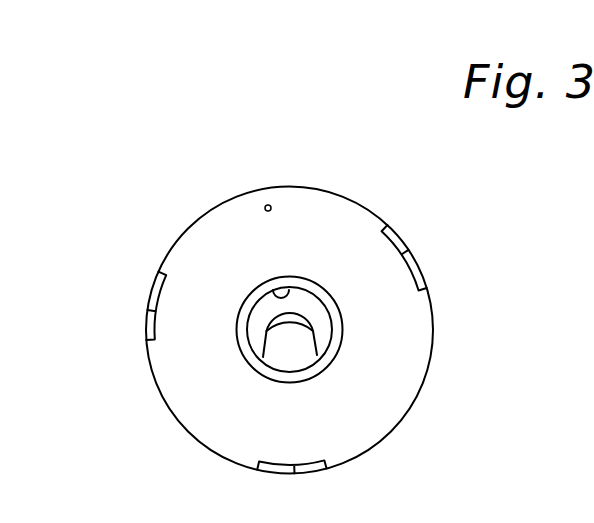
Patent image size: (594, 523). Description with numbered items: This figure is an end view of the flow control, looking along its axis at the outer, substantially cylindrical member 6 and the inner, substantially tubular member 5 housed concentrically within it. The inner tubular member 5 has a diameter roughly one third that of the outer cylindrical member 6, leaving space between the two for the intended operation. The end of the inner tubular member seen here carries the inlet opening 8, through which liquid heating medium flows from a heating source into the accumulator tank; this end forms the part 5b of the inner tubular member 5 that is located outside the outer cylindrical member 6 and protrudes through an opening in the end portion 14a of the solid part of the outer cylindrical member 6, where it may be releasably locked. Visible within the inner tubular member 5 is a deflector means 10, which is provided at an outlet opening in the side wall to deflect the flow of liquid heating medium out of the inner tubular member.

The outer cylindrical member 6 is at (236, 313).
The inner tubular member 5 is at (242, 283).
The part of the inner tubular member located outside the outer cylindrical member 5b is at (320, 287).
The inlet opening 8 is at (288, 292).
The end portion of the solid part 14a is at (190, 352).
The deflector means 10 is at (282, 332).